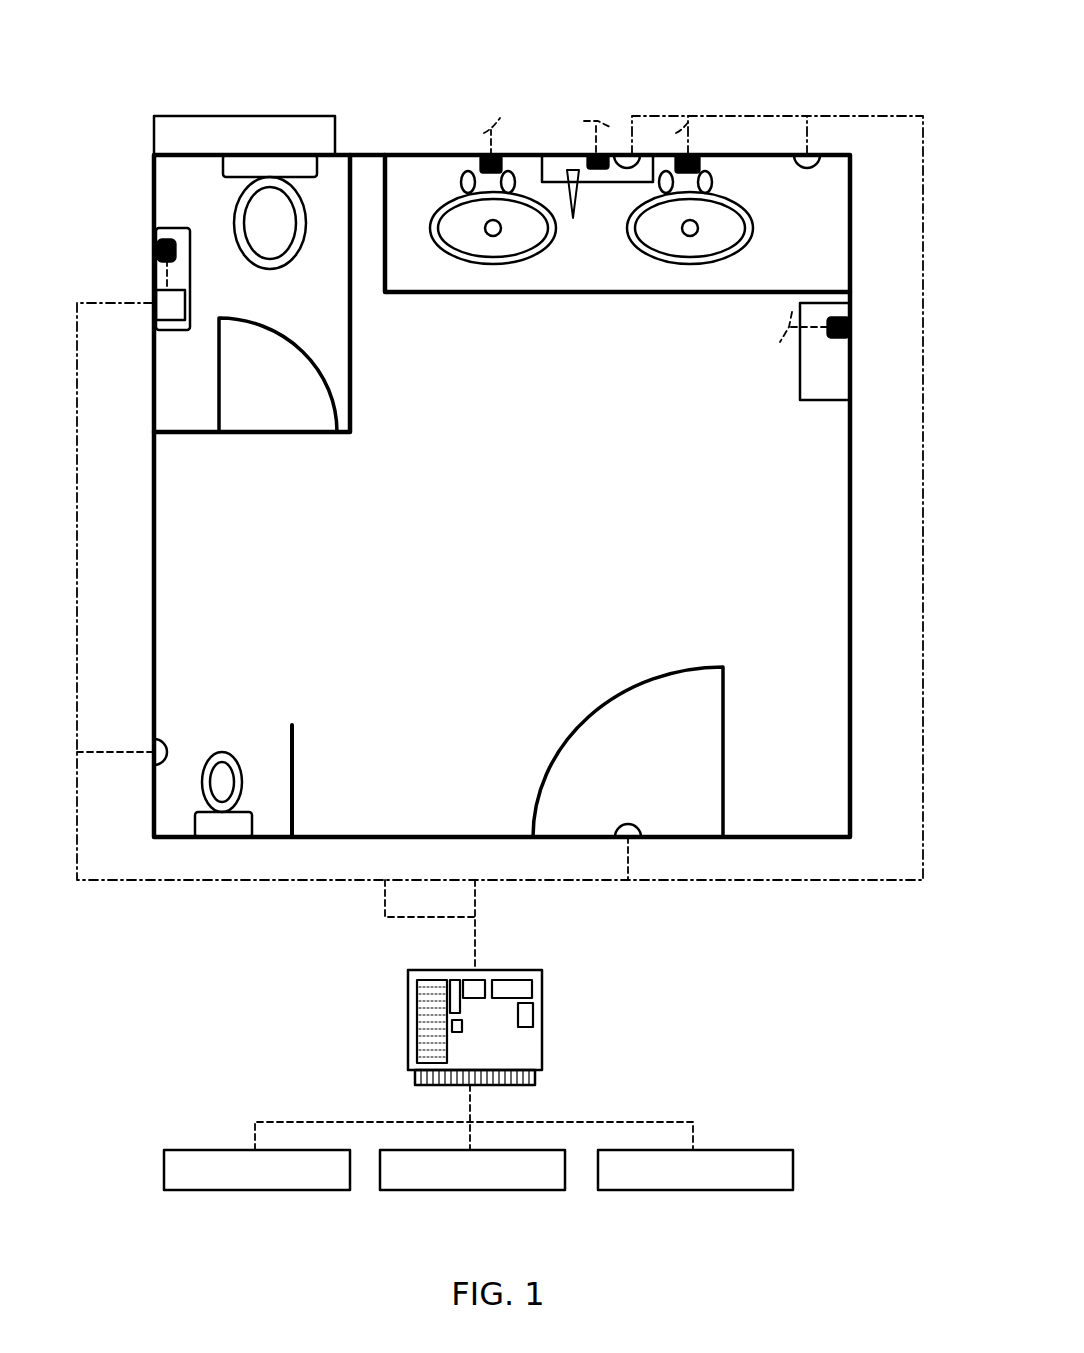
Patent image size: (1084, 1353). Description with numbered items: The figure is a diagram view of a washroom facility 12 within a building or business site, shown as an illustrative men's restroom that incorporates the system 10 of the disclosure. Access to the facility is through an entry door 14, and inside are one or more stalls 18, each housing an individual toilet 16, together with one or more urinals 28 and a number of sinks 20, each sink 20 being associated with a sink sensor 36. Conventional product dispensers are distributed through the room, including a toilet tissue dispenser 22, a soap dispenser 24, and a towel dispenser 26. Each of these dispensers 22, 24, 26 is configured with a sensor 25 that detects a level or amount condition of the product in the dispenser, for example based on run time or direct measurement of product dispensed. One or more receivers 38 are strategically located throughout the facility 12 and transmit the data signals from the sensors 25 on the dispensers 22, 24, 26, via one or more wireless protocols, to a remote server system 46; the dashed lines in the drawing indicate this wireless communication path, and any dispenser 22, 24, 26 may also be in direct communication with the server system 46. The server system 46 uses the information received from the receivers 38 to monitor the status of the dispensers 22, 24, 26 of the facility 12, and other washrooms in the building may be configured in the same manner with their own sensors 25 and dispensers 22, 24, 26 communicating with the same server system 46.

The system 10 is at (130, 57).
The washroom facility 12 is at (857, 588).
The entry door 14 is at (727, 719).
The toilet 16 is at (300, 256).
The stall 18 is at (352, 368).
The sink 20 is at (442, 250).
The toilet tissue dispenser 22 is at (175, 228).
The soap dispenser 24 is at (597, 185).
The sensor 25 is at (480, 162).
The towel dispenser 26 is at (800, 372).
The urinal 28 is at (240, 766).
The sink sensor 36 is at (496, 276).
The receiver 38 is at (186, 305).
The server system 46 is at (543, 1010).